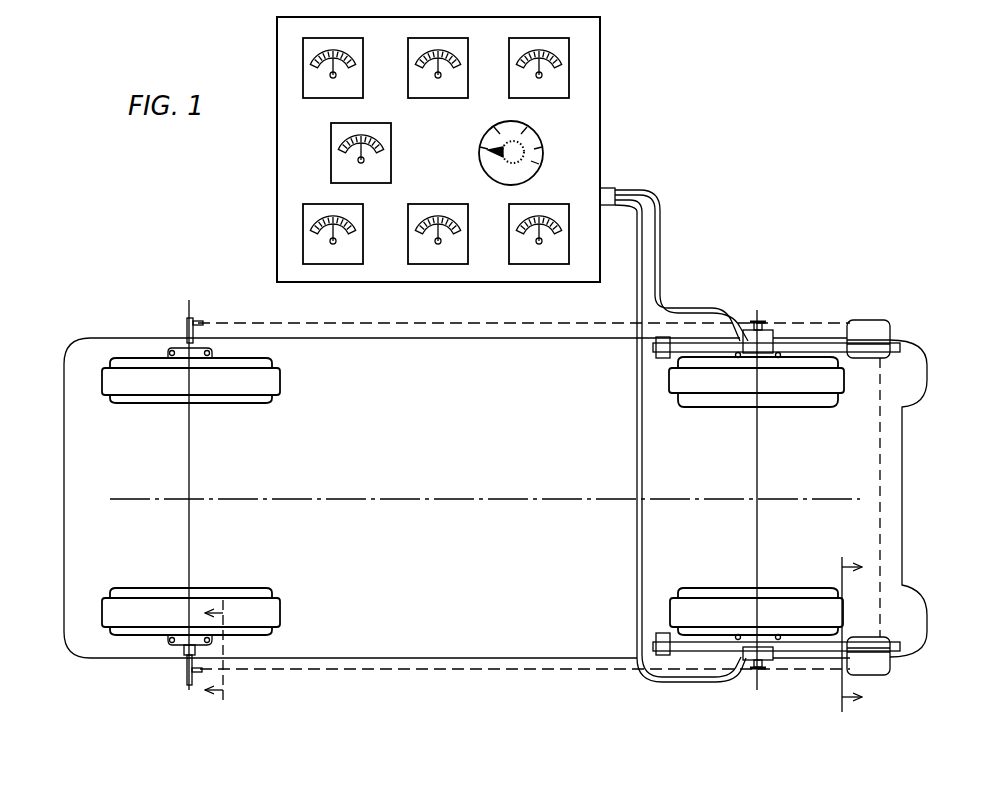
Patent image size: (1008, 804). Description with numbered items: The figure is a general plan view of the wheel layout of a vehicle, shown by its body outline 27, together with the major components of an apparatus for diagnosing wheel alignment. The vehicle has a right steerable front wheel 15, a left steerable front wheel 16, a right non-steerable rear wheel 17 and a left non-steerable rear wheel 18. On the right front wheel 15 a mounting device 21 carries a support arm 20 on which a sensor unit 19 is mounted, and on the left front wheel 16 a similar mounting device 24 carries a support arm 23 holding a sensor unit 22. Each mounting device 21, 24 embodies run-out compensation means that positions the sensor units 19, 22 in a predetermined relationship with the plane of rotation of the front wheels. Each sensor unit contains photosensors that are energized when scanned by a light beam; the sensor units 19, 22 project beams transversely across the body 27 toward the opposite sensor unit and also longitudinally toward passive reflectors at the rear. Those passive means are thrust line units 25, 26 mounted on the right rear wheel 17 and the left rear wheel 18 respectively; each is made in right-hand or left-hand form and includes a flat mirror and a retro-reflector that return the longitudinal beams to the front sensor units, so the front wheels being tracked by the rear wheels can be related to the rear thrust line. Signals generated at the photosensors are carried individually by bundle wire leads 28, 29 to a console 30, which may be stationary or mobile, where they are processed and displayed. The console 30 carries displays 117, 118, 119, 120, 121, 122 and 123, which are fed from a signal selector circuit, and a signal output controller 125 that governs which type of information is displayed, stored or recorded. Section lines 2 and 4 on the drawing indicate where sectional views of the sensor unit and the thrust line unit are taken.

The section line 2- 2 is at (844, 632).
The section line 4- 4 is at (222, 652).
The right steerable front wheel 15 is at (700, 602).
The left steerable front wheel 16 is at (712, 387).
The right non-steerable rear wheel 17 is at (262, 604).
The left non-steerable rear wheel 18 is at (267, 385).
The sensor unit 19 is at (881, 683).
The support arm 20 is at (803, 649).
The mounting device 21 is at (766, 665).
The sensor unit 22 is at (860, 318).
The support arm 23 is at (810, 343).
The mounting device 24 is at (770, 338).
The thrust line unit 25 is at (175, 668).
The thrust line unit 26 is at (177, 335).
The body outline 27 is at (437, 660).
The bundle wire lead 28 is at (703, 263).
The bundle wire lead 29 is at (643, 538).
The console 30 is at (603, 96).
The display 117 is at (312, 72).
The display 118 is at (568, 73).
The display 119 is at (419, 46).
The display 120 is at (309, 243).
The display 121 is at (553, 251).
The display 122 is at (457, 248).
The display 123 is at (337, 162).
The signal output controller 125 is at (530, 160).